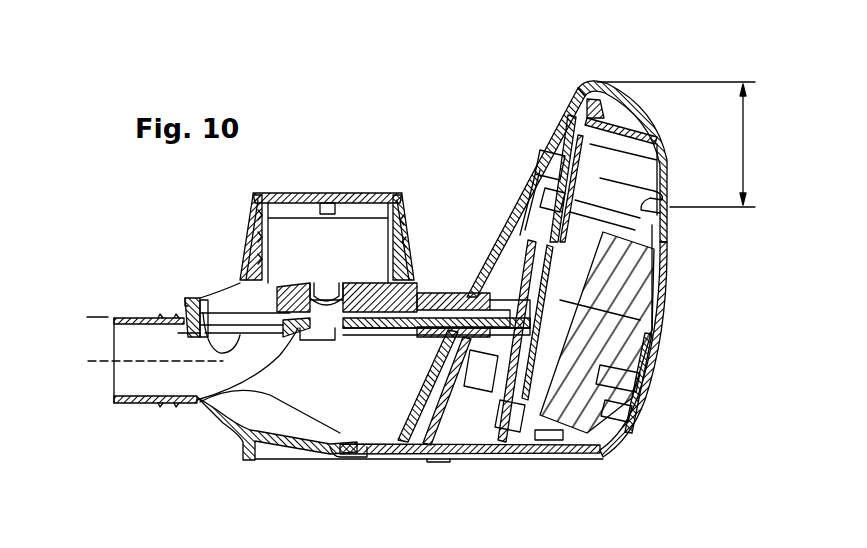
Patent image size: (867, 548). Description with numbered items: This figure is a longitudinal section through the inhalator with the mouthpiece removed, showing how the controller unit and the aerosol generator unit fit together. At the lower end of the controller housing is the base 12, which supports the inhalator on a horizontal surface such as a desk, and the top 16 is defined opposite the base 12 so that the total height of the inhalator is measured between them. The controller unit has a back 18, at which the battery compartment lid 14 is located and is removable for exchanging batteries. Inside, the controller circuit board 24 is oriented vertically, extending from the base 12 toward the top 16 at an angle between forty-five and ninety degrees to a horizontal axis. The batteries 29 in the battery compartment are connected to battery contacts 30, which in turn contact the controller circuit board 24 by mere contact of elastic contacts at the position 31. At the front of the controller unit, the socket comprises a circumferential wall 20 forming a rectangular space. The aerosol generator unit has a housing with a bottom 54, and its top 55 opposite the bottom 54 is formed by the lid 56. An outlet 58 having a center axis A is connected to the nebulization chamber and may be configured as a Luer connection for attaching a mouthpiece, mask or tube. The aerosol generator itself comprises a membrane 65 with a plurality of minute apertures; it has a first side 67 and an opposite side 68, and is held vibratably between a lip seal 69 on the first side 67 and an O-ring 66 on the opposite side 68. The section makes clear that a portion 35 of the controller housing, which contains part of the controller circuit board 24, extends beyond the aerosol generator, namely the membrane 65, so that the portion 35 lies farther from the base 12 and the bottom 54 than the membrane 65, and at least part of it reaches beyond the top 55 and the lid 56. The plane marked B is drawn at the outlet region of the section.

The top 16 is at (592, 74).
The portion 35 is at (676, 144).
The controller circuit board 24 is at (560, 160).
The position 31 is at (540, 192).
The battery contacts 30 is at (652, 240).
The battery compartment lid 14 is at (667, 285).
The batteries 29 is at (607, 308).
The back 18 is at (682, 359).
The top 55 is at (345, 186).
The lid 56 is at (400, 197).
The first side 67 is at (328, 303).
The lip seal 69 is at (275, 302).
The membrane 65 is at (326, 334).
The O-ring 66 is at (197, 333).
The opposite side 68 is at (323, 331).
The outlet 58 is at (128, 406).
The bottom 54 is at (366, 468).
The circumferential wall 20 is at (429, 492).
The base 12 is at (545, 462).
The center axis A is at (90, 363).
The plane B is at (99, 316).